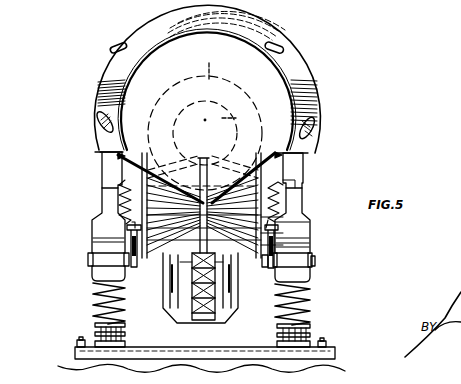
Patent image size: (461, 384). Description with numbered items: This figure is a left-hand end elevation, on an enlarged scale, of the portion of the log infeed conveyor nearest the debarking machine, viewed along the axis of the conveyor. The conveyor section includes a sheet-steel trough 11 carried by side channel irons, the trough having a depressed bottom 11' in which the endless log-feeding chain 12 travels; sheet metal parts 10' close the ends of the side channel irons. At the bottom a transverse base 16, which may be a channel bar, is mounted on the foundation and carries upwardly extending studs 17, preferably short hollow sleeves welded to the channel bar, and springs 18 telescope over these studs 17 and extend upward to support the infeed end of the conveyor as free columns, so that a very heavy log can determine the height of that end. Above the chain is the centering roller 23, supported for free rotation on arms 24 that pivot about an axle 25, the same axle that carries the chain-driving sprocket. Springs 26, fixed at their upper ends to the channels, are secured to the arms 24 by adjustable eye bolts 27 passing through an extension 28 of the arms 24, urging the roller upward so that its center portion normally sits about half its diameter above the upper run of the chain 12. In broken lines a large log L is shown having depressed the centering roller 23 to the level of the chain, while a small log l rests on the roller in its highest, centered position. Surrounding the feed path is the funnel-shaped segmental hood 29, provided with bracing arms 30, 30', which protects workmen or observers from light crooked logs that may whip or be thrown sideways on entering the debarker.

The segmental hood 29 is at (151, 28).
The bracing arm 30 is at (185, 48).
The bracing arm 30' is at (188, 125).
The centering roller 23 is at (207, 158).
The large log L is at (207, 65).
The small log l is at (232, 120).
The sheet metal part 10' is at (97, 216).
The sheet-steel trough 11 is at (178, 177).
The depressed bottom 11' is at (305, 217).
The spring 26 is at (287, 188).
The arm 24 is at (272, 262).
The log-feeding chain 12 is at (203, 318).
The extension 28 is at (290, 225).
The adjustable eye bolt 27 is at (290, 241).
The axle 25 is at (315, 262).
The spring 18 is at (300, 296).
The stud 17 is at (305, 329).
The transverse base 16 is at (338, 359).